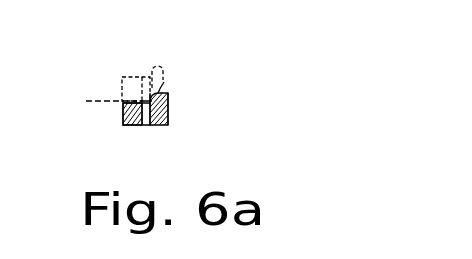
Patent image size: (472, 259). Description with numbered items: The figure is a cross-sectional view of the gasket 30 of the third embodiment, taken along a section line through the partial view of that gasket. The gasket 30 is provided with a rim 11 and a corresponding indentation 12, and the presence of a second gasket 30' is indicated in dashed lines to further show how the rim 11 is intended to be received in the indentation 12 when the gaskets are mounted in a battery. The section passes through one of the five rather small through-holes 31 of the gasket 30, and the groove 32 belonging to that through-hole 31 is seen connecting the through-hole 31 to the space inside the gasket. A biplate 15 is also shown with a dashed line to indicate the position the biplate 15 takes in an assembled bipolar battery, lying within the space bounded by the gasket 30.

The gasket 30 is at (91, 81).
The second gasket 30' is at (146, 61).
The rim 11 is at (164, 82).
The biplate 15 is at (87, 104).
The groove 32 is at (131, 121).
The through-hole 31 is at (157, 124).
The indentation 12 is at (163, 124).